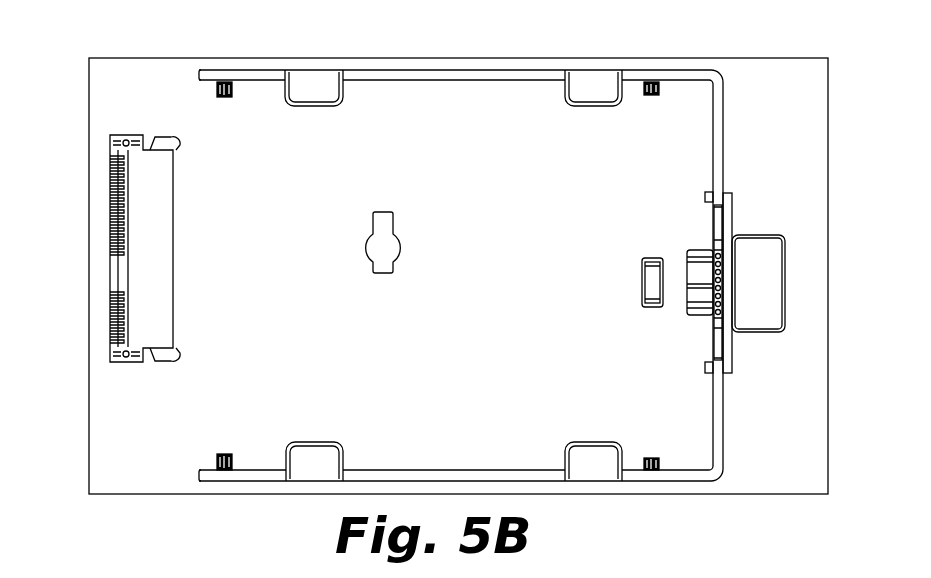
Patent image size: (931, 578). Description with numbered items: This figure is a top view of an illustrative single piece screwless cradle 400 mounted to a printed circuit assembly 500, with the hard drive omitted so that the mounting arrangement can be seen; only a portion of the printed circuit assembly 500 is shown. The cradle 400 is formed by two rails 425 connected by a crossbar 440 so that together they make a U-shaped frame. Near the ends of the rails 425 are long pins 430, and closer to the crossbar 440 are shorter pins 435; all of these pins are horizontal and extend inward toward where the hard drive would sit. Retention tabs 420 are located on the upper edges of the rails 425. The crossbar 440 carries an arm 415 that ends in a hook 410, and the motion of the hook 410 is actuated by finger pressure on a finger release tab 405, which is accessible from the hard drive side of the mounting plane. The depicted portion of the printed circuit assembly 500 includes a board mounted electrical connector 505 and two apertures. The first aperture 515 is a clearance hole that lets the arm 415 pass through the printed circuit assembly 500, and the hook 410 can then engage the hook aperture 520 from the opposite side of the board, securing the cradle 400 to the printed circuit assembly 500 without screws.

The cradle 400 is at (502, 247).
The finger release tab 405 is at (725, 330).
The hook 410 is at (652, 283).
The arm 415 is at (700, 253).
The retention tabs 420 is at (311, 92).
The rails 425 is at (452, 78).
The long pins 430 is at (222, 80).
The shorter pins 435 is at (658, 82).
The crossbar 440 is at (722, 413).
The printed circuit assembly 500 is at (127, 90).
The board mounted electrical connector 505 is at (142, 273).
The first aperture 515 is at (762, 248).
The hook aperture 520 is at (650, 258).